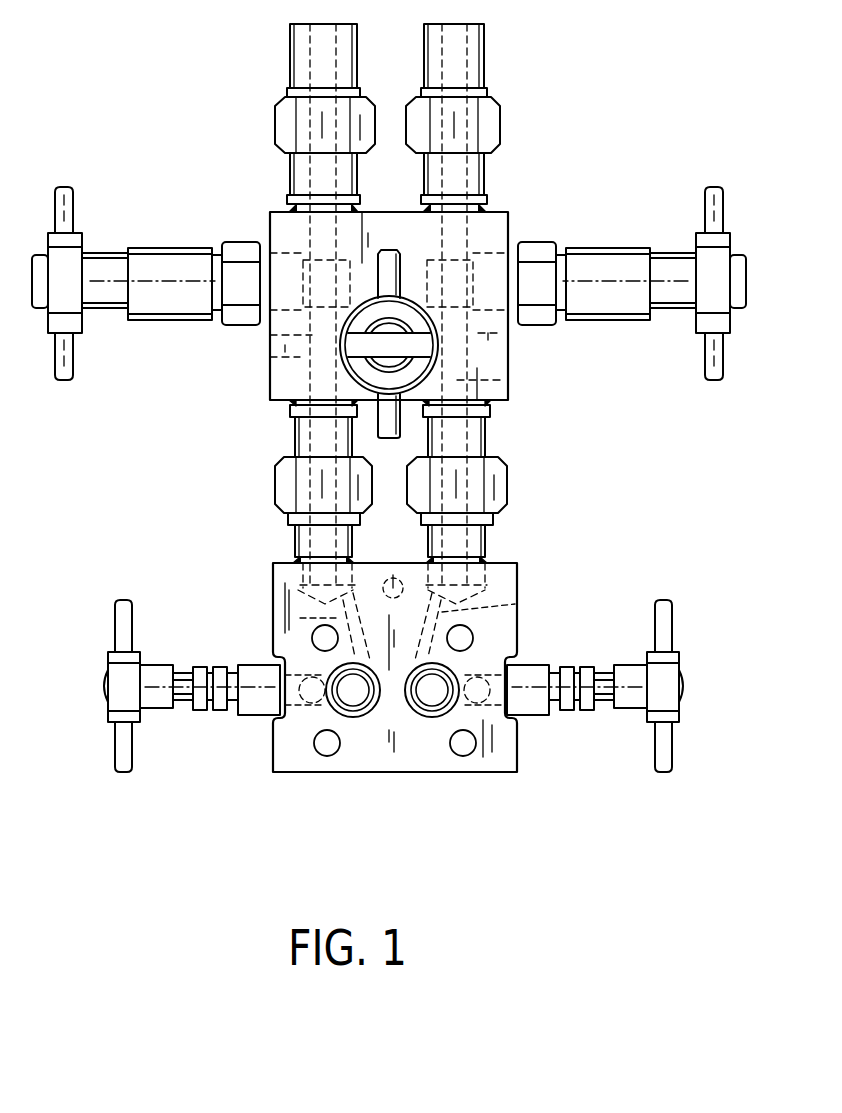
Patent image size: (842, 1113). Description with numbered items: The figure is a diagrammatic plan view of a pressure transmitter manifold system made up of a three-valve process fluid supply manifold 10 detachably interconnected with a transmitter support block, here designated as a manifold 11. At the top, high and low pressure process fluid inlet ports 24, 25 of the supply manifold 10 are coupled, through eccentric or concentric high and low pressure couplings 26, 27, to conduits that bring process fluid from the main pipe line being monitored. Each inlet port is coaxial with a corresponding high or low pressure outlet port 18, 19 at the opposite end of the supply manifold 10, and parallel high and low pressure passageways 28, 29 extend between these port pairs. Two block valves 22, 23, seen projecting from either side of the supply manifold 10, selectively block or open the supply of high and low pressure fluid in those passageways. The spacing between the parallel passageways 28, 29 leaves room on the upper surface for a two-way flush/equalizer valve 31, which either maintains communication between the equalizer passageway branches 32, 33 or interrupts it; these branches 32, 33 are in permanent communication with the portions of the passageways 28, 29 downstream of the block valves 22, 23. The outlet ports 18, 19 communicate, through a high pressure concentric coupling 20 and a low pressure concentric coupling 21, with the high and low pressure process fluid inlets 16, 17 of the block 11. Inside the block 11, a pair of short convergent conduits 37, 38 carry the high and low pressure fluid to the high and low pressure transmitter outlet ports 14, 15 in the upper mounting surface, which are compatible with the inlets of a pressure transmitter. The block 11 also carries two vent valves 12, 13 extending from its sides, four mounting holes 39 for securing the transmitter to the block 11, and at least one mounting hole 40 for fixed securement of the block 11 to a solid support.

The process fluid supply manifold 10 is at (250, 397).
The transmitter support block 11 is at (264, 592).
The vent valve 12 is at (157, 705).
The vent valve 13 is at (630, 695).
The high pressure transmitter outlet port 14 is at (348, 695).
The low pressure transmitter outlet port 15 is at (433, 697).
The high pressure process fluid inlet 16 is at (300, 543).
The low pressure process fluid inlet 17 is at (490, 545).
The high pressure outlet port 18 is at (292, 410).
The low pressure outlet port 19 is at (485, 408).
The high pressure concentric coupling 20 is at (275, 478).
The low pressure concentric coupling 21 is at (507, 480).
The block valve 22 is at (108, 262).
The block valve 23 is at (610, 267).
The high pressure process fluid inlet port 24 is at (293, 207).
The low pressure process fluid inlet port 25 is at (482, 208).
The high pressure coupling 26 is at (285, 118).
The low pressure coupling 27 is at (493, 120).
The high pressure passageway 28 is at (322, 242).
The low pressure passageway 29 is at (457, 238).
The flush/equalizer valve 31 is at (404, 428).
The equalizer passageway branch 32 is at (360, 345).
The equalizer passageway branch 33 is at (427, 344).
The convergent conduit 37 is at (284, 621).
The convergent conduit 38 is at (515, 604).
The mounting hole 39 is at (462, 638).
The mounting hole 40 is at (393, 577).